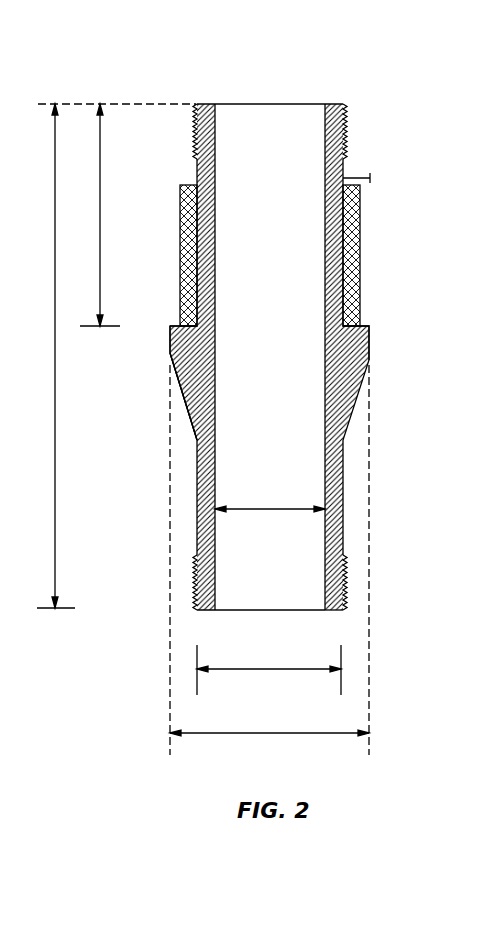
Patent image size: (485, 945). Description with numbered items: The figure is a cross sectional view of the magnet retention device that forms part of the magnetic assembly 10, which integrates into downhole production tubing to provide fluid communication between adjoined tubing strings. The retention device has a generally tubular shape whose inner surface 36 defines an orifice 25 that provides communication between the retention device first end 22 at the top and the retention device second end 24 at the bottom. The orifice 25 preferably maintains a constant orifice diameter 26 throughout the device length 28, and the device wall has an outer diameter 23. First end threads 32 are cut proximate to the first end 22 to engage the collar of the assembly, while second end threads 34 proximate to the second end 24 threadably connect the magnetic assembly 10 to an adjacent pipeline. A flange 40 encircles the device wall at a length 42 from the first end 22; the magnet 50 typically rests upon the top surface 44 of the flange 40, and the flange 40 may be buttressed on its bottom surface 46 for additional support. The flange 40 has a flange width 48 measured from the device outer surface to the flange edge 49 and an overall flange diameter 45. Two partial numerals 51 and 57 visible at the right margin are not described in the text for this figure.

The magnetic assembly 10 is at (178, 38).
The retention device first end 22 is at (340, 104).
The outer diameter 23 is at (272, 670).
The retention device second end 24 is at (335, 612).
The orifice 25 is at (268, 600).
The orifice diameter 26 is at (297, 508).
The device length 28 is at (55, 410).
The first end threads 32 is at (194, 124).
The second end threads 34 is at (194, 573).
The inner surface 36 is at (325, 253).
The flange 40 is at (180, 396).
The length 42 is at (100, 253).
The top surface 44 is at (175, 327).
The flange diameter 45 is at (270, 735).
The bottom surface 46 is at (193, 447).
The flange width 48 is at (358, 177).
The flange edge 49 is at (370, 340).
The magnet 50 is at (360, 232).
The adjacent figure element 51 is at (474, 474).
The adjacent figure element 57 is at (483, 406).